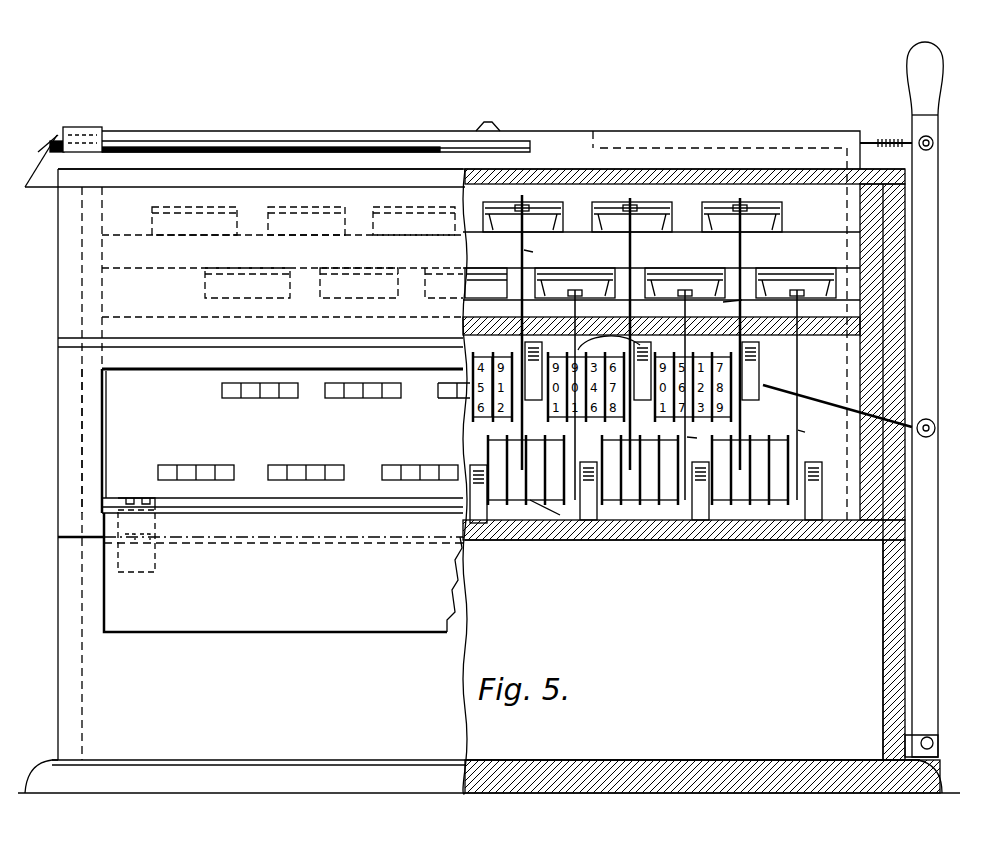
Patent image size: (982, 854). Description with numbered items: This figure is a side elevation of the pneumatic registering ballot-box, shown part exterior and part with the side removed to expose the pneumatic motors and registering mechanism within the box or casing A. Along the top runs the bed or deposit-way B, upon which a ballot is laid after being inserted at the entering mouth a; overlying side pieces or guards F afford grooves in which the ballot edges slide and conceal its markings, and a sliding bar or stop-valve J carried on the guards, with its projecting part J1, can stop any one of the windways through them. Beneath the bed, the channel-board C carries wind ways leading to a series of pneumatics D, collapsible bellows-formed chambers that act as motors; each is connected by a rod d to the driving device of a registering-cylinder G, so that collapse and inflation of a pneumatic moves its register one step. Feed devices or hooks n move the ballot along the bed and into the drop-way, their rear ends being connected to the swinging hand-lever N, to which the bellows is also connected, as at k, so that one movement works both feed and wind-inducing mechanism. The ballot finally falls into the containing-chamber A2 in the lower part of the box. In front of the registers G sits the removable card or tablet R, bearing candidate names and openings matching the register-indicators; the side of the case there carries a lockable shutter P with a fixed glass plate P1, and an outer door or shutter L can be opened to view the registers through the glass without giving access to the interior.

The box or casing A is at (260, 277).
The containing-chamber A2 is at (674, 650).
The bed or deposit-way B is at (260, 160).
The channel-board C is at (684, 386).
The pneumatics D is at (650, 250).
The rods d is at (670, 355).
The side pieces or guards F is at (342, 134).
The registering-cylinders G is at (756, 442).
The sliding bar or stop-valve J is at (92, 129).
The slide projection J1 is at (488, 128).
The outer door or shutter L is at (283, 565).
The swinging hand-lever N is at (930, 342).
The doors or shutters P is at (66, 435).
The glass plate P1 is at (105, 442).
The removable card or tablet R is at (282, 441).
The entering mouth a is at (42, 148).
The bellows connection k is at (938, 430).
The feed devices or hooks n is at (896, 133).